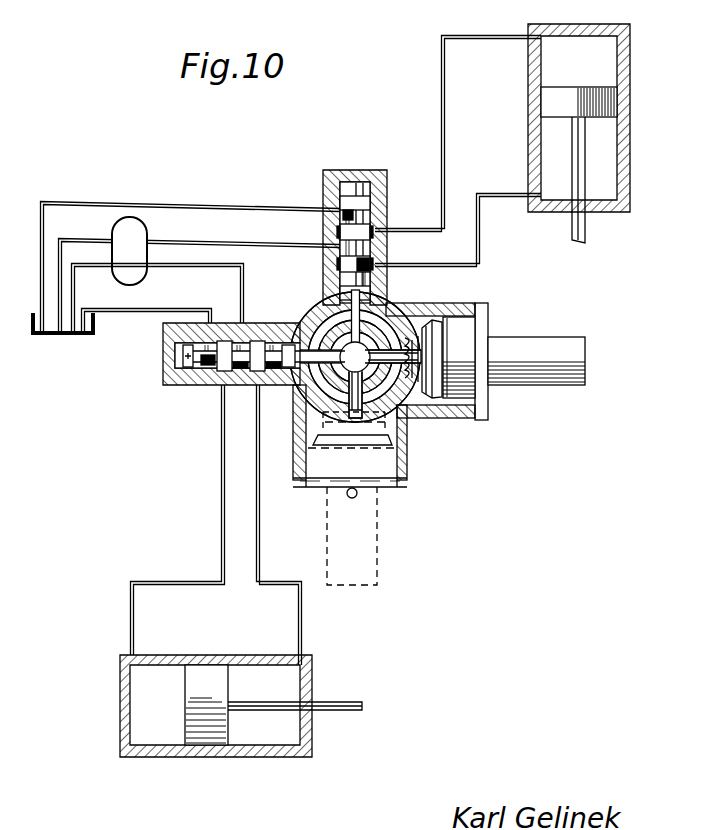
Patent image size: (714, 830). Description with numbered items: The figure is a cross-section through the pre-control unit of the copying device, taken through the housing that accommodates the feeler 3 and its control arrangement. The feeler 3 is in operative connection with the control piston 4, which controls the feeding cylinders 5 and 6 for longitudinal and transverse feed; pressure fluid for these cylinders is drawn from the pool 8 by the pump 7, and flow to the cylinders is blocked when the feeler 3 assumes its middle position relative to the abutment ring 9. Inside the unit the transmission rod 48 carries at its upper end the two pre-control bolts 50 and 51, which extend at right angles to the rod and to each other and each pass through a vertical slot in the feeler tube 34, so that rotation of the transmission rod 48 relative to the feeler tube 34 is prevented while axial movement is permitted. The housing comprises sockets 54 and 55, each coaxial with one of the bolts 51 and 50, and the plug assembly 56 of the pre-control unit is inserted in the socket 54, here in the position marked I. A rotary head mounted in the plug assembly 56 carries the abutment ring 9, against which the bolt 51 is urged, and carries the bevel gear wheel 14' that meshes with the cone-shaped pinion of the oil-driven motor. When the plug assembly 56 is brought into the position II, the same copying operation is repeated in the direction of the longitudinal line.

The feeler 3 is at (193, 372).
The control piston 4 is at (343, 198).
The feeding cylinder 5 is at (197, 653).
The feeding cylinder 6 is at (636, 77).
The pump 7 is at (125, 232).
The pool 8 is at (95, 332).
The abutment ring 9 is at (412, 388).
The bevel gear wheel 14' is at (471, 352).
The feeler tube 34 is at (310, 306).
The transmission rod 48 is at (357, 355).
The pre-control bolt 50 is at (355, 420).
The pre-control bolt 51 is at (397, 418).
The socket 54 is at (441, 306).
The socket 55 is at (302, 434).
The plug assembly 56 is at (570, 342).
The drive shaft I is at (540, 352).
The position II is at (352, 536).